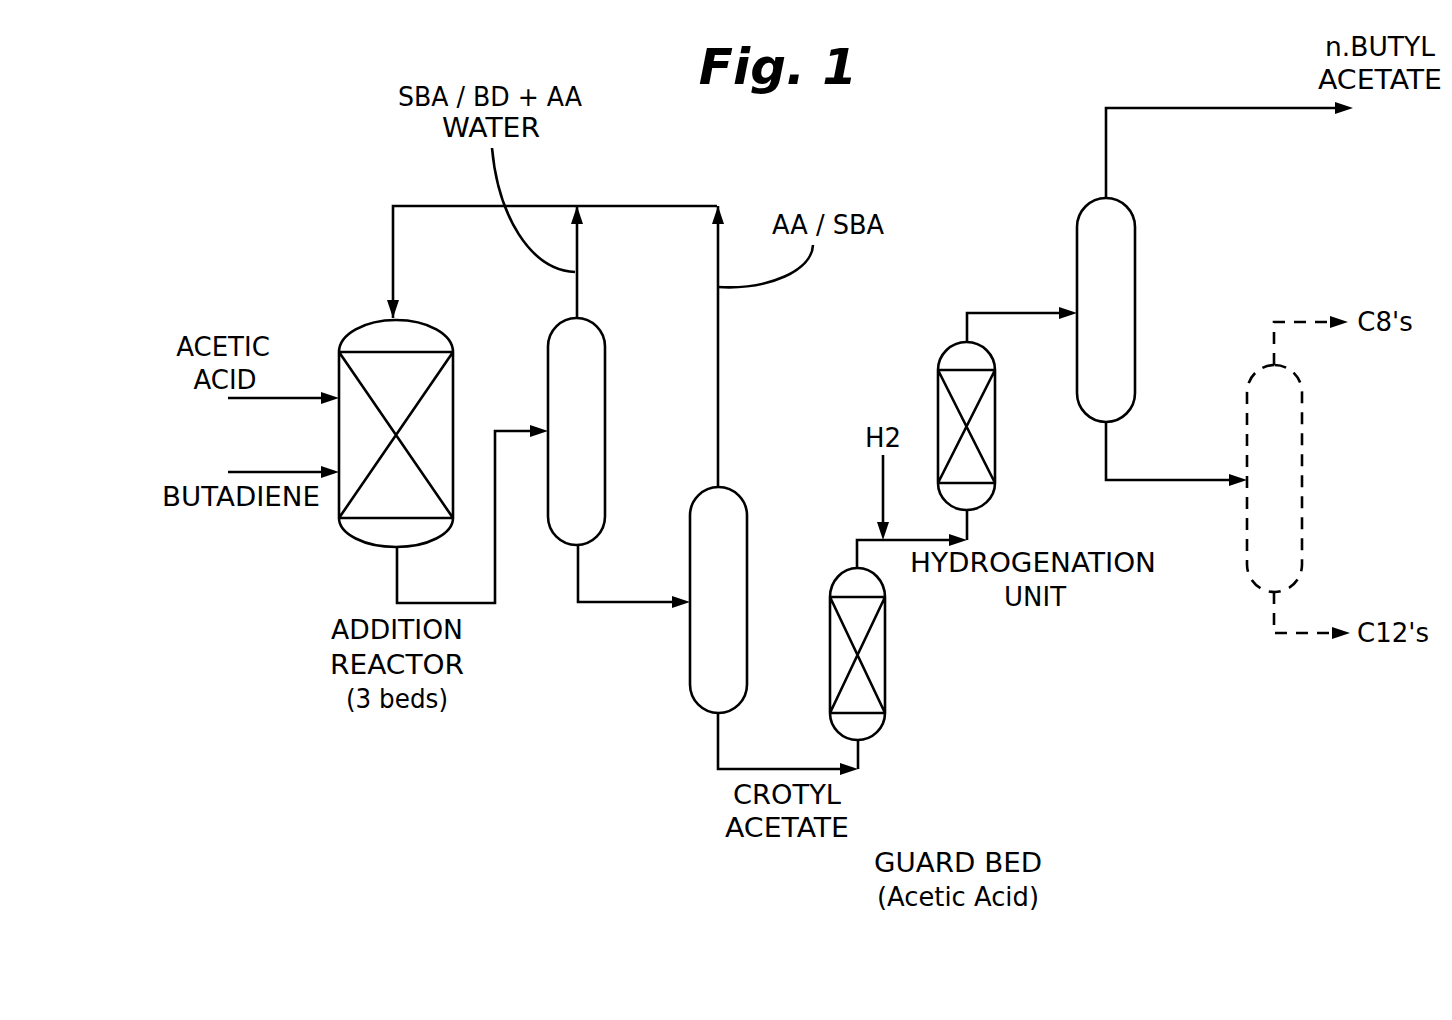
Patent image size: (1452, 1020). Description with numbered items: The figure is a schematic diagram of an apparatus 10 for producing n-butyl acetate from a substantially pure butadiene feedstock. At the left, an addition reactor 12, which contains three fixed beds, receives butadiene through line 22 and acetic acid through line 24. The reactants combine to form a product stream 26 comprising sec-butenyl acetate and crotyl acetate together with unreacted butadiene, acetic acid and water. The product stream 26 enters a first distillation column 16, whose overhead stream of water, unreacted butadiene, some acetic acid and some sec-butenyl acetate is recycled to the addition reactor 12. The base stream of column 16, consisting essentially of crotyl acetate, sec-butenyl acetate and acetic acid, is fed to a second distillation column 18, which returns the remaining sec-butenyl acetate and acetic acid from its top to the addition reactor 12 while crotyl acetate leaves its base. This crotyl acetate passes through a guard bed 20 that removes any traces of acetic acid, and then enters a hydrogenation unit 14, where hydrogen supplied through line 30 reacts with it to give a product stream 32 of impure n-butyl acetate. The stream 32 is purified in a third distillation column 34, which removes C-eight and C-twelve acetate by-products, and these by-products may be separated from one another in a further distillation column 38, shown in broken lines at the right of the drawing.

The apparatus 10 is at (506, 756).
The addition reactor 12 is at (368, 545).
The hydrogenation unit 14 is at (995, 438).
The distillation column 16 is at (547, 517).
The second distillation column 18 is at (690, 658).
The guard bed 20 is at (887, 683).
The line 22 is at (254, 471).
The line 24 is at (270, 400).
The product stream 26 is at (423, 603).
The line 30 is at (882, 493).
The product stream 32 is at (1023, 312).
The third distillation column 34 is at (1135, 281).
The further distillation column 38 is at (1302, 500).